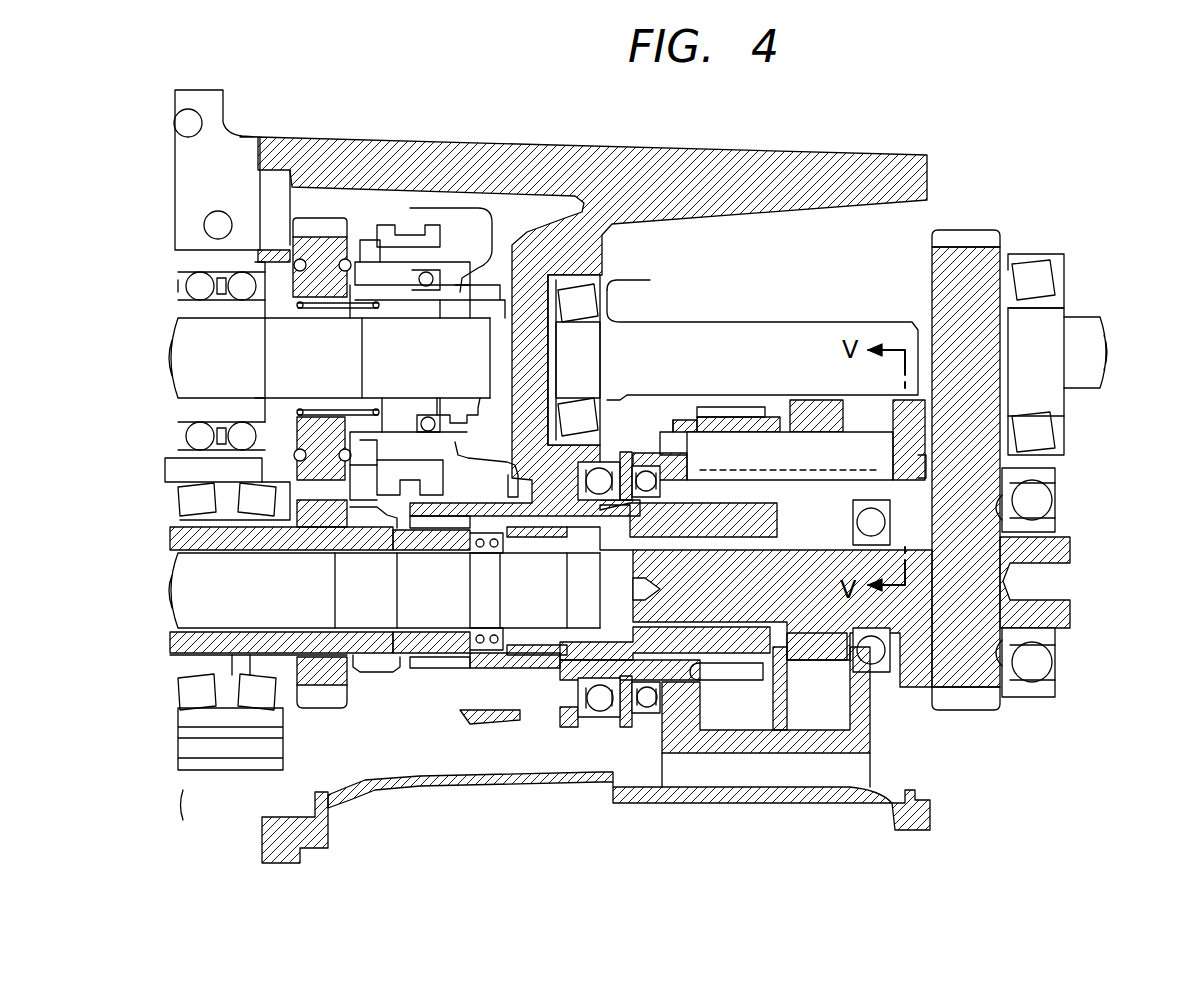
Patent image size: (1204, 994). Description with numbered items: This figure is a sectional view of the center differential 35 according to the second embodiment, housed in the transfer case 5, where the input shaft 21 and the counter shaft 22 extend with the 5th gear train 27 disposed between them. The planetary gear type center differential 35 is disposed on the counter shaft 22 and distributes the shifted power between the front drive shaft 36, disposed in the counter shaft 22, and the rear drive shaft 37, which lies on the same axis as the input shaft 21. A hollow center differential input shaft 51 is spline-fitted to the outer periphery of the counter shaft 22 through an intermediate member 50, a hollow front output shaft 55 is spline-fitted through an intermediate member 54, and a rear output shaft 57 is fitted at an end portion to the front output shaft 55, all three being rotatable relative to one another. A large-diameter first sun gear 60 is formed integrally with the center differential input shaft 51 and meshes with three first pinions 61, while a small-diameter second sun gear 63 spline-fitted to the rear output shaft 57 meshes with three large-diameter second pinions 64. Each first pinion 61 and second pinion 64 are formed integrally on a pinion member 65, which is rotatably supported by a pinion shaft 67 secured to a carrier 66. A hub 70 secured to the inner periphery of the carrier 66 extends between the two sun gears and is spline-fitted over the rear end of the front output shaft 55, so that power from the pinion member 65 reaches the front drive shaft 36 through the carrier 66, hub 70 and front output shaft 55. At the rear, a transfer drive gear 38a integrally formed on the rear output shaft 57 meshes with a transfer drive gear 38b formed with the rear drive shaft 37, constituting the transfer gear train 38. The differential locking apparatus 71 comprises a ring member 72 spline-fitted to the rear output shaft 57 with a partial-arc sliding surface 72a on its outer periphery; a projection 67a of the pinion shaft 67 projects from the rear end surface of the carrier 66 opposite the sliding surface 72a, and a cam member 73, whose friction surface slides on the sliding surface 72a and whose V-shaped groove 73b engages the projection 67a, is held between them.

The transfer case 5 is at (540, 150).
The input shaft 21 is at (332, 330).
The 5th gear train 27 is at (332, 296).
The counter shaft 22 is at (370, 650).
The front drive shaft 36 is at (258, 690).
The rear drive shaft 37 is at (775, 320).
The transfer gear train 38 is at (1015, 457).
The transfer drive gear 38a is at (980, 712).
The transfer drive gear 38b is at (970, 230).
The first pinion 61 is at (700, 405).
The second pinion 64 is at (812, 400).
The pinion member 65 is at (778, 420).
The pinion shaft 67 is at (692, 443).
The projection 67a is at (910, 430).
The cam member 73 is at (1020, 508).
The V-shaped groove 73b is at (920, 470).
The ring member 72 is at (1018, 655).
The sliding surface 72a is at (920, 538).
The differential locking apparatus 71 is at (953, 783).
The center differential 35 is at (690, 775).
The intermediate member 50 is at (430, 665).
The center differential input shaft 51 is at (485, 668).
The intermediate member 54 is at (545, 640).
The front output shaft 55 is at (627, 718).
The first sun gear 60 is at (725, 680).
The carrier 66 is at (788, 690).
The rear output shaft 57 is at (815, 660).
The second sun gear 63 is at (835, 660).
The hub 70 is at (740, 705).